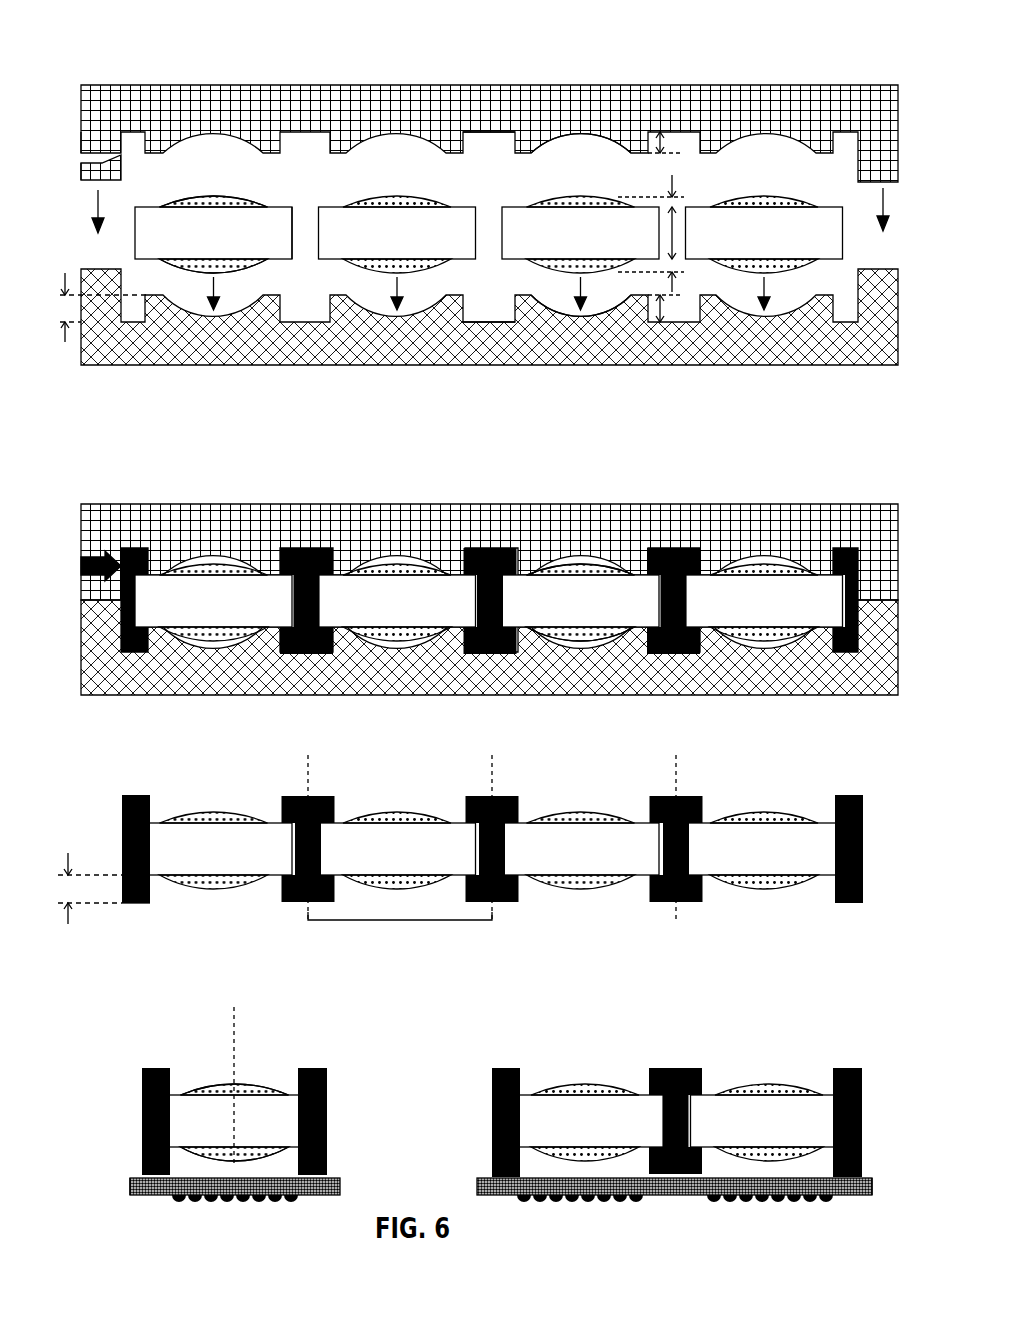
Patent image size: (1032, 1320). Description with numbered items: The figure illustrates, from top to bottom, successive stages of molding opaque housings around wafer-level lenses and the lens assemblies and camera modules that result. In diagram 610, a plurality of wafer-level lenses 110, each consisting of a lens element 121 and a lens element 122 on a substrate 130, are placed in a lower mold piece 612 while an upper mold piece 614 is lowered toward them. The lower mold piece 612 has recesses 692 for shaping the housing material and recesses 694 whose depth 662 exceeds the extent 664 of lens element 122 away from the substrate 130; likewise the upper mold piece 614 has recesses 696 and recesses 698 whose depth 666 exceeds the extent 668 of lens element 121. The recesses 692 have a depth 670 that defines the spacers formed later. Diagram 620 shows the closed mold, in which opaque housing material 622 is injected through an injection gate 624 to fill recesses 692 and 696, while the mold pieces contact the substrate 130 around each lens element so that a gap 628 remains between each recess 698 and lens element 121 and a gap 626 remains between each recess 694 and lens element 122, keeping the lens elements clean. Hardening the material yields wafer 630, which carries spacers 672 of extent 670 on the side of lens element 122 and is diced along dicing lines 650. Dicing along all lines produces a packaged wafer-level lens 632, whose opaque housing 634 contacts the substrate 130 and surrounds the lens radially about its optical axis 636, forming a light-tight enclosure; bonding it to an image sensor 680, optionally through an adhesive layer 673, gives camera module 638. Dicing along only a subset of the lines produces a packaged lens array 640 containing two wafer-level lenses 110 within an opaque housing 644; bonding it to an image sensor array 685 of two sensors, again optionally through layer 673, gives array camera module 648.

The diagram 610 is at (115, 52).
The upper mold piece 614 is at (797, 85).
The lower mold piece 612 is at (778, 365).
The injection gate 624 is at (96, 132).
The wafer-level lens 110 is at (268, 188).
The lens element 121 is at (196, 200).
The lens element 122 is at (196, 274).
The substrate 130 is at (290, 260).
The depth 670 is at (66, 332).
The recess 696 is at (486, 128).
The recess 698 is at (572, 128).
The recess 692 is at (478, 342).
The recess 694 is at (580, 342).
The depth 666 is at (660, 130).
The extent 668 is at (672, 186).
The depth 662 is at (672, 325).
The extent 664 is at (672, 292).
The diagram 620 is at (102, 485).
The opaque housing material 622 is at (80, 570).
The gap 628 is at (584, 557).
The gap 626 is at (590, 648).
The wafer 630 is at (112, 824).
The dicing line 650 is at (307, 760).
The spacer 672 is at (151, 896).
The packaged wafer-level lens 632 is at (400, 920).
The camera module 638 is at (118, 990).
The opaque housing 634 is at (150, 1068).
The optical axis 636 is at (232, 1052).
The layer 673 is at (328, 1182).
The image sensor 680 is at (130, 1190).
The array camera module 648 is at (454, 1006).
The packaged lens array 640 is at (472, 1117).
The opaque housing 644 is at (506, 1068).
The image sensor array 685 is at (873, 1191).